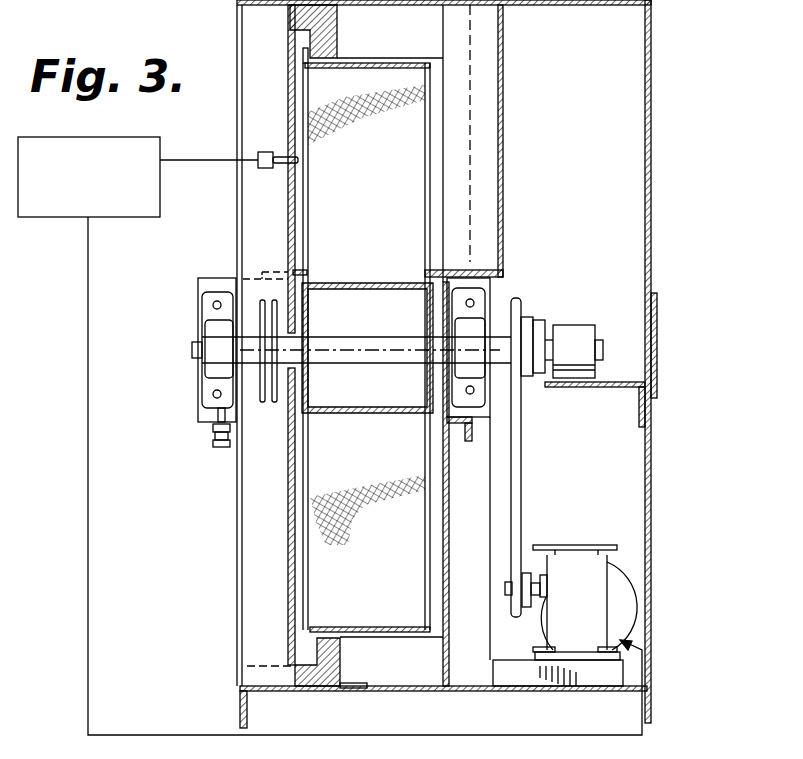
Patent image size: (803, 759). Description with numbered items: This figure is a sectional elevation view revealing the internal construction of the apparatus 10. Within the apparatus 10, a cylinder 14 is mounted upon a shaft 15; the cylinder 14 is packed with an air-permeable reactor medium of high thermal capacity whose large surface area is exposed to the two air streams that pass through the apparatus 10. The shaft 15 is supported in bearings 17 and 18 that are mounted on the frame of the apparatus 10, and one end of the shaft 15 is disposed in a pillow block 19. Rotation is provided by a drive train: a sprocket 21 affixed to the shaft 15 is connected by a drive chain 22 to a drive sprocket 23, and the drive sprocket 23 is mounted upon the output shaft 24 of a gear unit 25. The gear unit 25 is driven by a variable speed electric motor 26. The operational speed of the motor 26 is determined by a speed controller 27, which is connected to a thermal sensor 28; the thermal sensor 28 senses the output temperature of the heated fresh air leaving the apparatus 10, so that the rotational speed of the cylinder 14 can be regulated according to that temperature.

The apparatus 10 is at (662, 138).
The cylinder 14 is at (375, 63).
The shaft 15 is at (392, 352).
The bearing 17 is at (214, 366).
The bearing 18 is at (478, 332).
The pillow block 19 is at (585, 328).
The sprocket 21 is at (527, 320).
The drive chain 22 is at (522, 487).
The drive sprocket 23 is at (525, 575).
The output shaft 24 is at (531, 595).
The gear unit 25 is at (585, 550).
The variable speed electric motor 26 is at (620, 620).
The speed controller 27 is at (62, 218).
The thermal sensor 28 is at (279, 151).